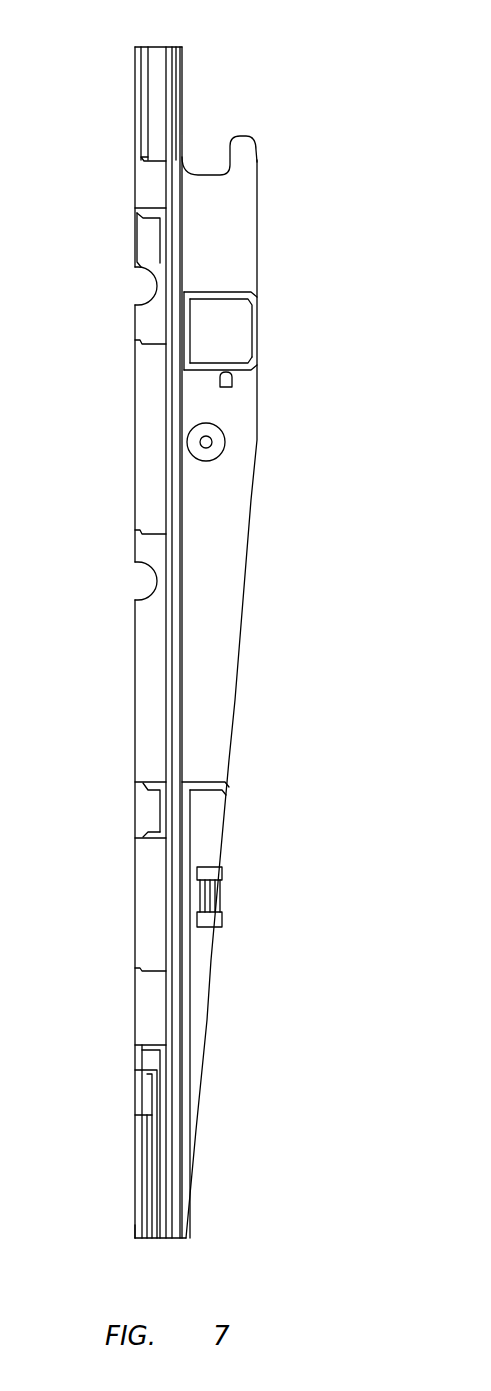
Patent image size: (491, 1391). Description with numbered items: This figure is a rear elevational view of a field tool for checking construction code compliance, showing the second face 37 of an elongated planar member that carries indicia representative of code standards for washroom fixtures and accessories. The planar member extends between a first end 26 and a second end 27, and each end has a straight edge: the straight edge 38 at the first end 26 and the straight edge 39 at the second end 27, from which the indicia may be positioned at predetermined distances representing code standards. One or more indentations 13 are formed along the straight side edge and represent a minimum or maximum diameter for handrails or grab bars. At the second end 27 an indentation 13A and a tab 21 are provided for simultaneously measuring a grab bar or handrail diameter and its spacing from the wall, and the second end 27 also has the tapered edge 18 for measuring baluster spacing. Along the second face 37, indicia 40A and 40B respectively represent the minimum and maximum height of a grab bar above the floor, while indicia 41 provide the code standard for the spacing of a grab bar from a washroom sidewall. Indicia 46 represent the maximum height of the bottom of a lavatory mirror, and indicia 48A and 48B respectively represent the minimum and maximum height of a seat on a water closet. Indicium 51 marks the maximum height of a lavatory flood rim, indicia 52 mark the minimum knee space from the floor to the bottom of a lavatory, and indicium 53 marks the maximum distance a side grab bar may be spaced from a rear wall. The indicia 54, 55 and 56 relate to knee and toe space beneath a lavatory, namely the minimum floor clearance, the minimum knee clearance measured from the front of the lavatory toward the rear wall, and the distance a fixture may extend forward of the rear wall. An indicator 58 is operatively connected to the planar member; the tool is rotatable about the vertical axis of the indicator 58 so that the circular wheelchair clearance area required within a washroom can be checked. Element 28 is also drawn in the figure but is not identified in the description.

The indentation 13 is at (120, 297).
The indentation 13A is at (205, 160).
The tapered edge 18 is at (258, 152).
The tab 21 is at (135, 90).
The first end 26 is at (197, 1227).
The second end 27 is at (197, 72).
The spring clip 28 is at (222, 898).
The second face 37 is at (240, 242).
The straight edge 38 is at (147, 47).
The straight edge 39 is at (136, 1238).
The indicia 40A is at (257, 292).
The indicia 40B is at (257, 370).
The indicia 41 is at (141, 162).
The indicia 46 is at (137, 212).
The indicia 48A is at (140, 838).
The indicia 48B is at (140, 782).
The indicium 51 is at (138, 340).
The indicia 52 is at (138, 533).
The indicium 53 is at (140, 969).
The indicia 54 is at (140, 1045).
The indicia 55 is at (140, 1071).
The indicia 56 is at (140, 1115).
The indicator 58 is at (226, 442).